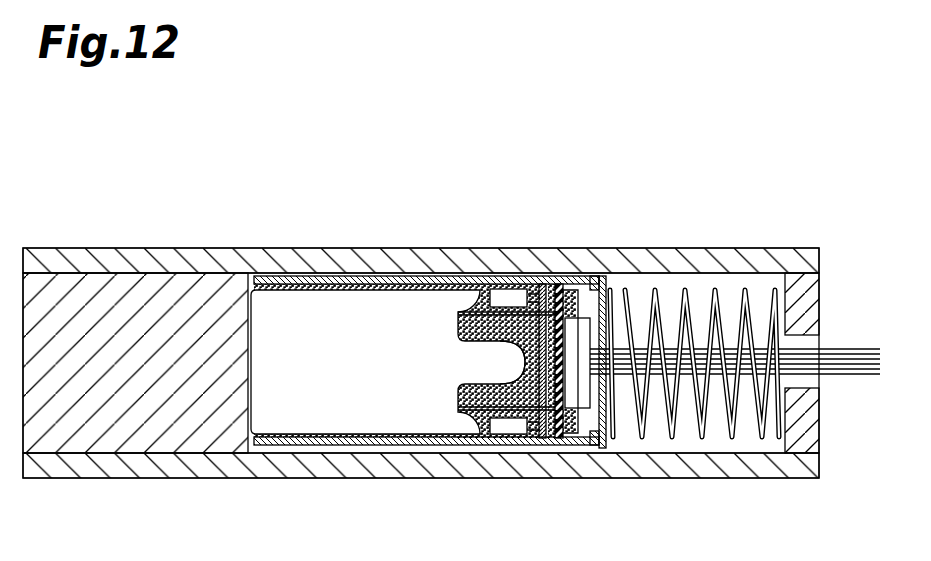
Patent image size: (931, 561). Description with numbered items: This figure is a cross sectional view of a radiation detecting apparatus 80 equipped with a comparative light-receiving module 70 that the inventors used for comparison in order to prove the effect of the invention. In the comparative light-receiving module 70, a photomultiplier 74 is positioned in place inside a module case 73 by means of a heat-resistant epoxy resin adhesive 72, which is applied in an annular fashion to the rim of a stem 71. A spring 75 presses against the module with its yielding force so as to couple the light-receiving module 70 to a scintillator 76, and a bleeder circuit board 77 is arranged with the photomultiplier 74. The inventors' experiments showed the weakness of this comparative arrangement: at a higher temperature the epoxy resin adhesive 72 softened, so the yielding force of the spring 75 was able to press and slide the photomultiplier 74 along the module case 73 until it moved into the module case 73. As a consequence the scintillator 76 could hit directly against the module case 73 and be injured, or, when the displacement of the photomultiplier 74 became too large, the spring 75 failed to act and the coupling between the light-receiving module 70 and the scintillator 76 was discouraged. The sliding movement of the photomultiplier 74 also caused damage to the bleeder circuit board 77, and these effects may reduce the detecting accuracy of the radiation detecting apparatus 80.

The comparative light-receiving module 70 is at (428, 405).
The stem 71 is at (457, 389).
The heat-resistant epoxy resin adhesive 72 is at (472, 430).
The module case 73 is at (398, 444).
The photomultiplier 74 is at (341, 406).
The spring 75 is at (692, 418).
The scintillator 76 is at (110, 441).
The bleeder circuit board 77 is at (557, 437).
The radiation detecting apparatus 80 is at (146, 250).